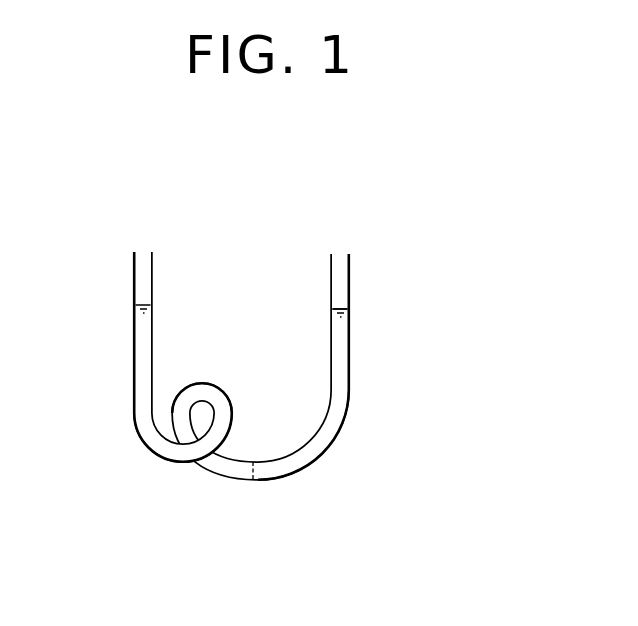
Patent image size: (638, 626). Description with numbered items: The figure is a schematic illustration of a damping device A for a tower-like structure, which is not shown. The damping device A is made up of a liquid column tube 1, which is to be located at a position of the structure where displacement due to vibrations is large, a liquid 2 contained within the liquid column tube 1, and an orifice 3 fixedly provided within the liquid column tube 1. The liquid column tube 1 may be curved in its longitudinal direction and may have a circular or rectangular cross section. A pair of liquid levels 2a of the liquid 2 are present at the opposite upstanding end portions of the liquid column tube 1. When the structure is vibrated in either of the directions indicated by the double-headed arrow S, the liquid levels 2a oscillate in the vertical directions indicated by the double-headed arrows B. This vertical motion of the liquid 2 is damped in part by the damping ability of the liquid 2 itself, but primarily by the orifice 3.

The liquid column tube 1 is at (349, 265).
The liquid 2 is at (344, 419).
The liquid levels 2a is at (336, 307).
The orifice 3 is at (261, 480).
The damping device A is at (305, 230).
The double-headed arrow S is at (238, 209).
The double-headed arrows B is at (377, 337).